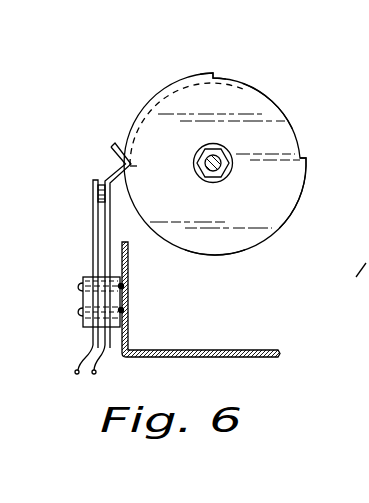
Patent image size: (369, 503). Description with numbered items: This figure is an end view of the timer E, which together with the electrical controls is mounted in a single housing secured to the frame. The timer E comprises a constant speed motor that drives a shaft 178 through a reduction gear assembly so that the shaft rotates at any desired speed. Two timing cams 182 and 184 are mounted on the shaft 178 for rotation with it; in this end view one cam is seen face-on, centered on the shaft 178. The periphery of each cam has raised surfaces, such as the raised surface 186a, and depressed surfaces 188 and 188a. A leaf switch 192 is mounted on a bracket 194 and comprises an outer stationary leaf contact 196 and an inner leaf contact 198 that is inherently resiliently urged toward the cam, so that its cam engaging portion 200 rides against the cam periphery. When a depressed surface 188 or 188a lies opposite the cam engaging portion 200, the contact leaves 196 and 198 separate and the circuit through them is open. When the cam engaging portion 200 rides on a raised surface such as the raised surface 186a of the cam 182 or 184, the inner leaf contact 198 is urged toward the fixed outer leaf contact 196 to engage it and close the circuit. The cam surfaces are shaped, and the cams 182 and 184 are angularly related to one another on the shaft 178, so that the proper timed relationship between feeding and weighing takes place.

The timer E is at (153, 78).
The shaft 178 is at (232, 161).
The timing cam 182 is at (191, 79).
The timing cam 184 is at (286, 207).
The raised surface 186a is at (226, 253).
The depressed surface 188 is at (148, 103).
The depressed surface 188a is at (269, 104).
The leaf switch 192 is at (102, 248).
The bracket 194 is at (170, 358).
The outer stationary leaf contact 196 is at (97, 224).
The inner leaf contact 198 is at (110, 227).
The cam engaging portion 200 is at (111, 156).